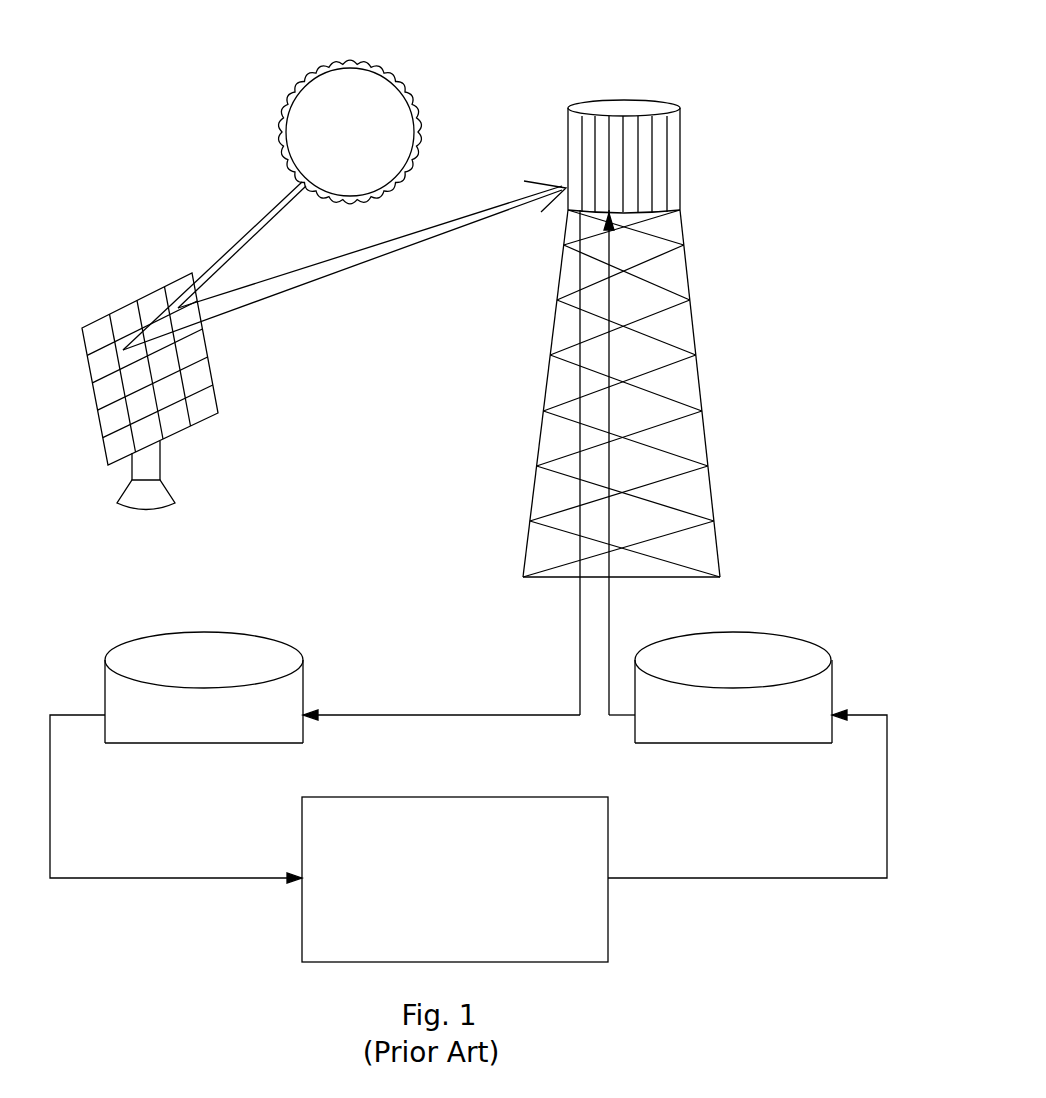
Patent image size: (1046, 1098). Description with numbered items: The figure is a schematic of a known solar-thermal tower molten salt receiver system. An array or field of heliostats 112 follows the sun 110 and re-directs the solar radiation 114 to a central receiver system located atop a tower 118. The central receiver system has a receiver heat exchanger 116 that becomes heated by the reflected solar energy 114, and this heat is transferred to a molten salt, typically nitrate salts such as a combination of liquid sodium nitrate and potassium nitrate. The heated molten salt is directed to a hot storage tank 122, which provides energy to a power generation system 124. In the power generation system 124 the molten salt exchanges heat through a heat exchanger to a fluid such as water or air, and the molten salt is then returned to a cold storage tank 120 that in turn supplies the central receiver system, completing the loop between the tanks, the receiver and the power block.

The sun 110 is at (410, 102).
The heliostats 112 is at (217, 393).
The solar radiation 114 is at (345, 273).
The receiver heat exchanger 116 is at (682, 128).
The tower 118 is at (692, 295).
The cold storage tank 120 is at (722, 632).
The hot storage tank 122 is at (287, 643).
The power generation system 124 is at (472, 795).